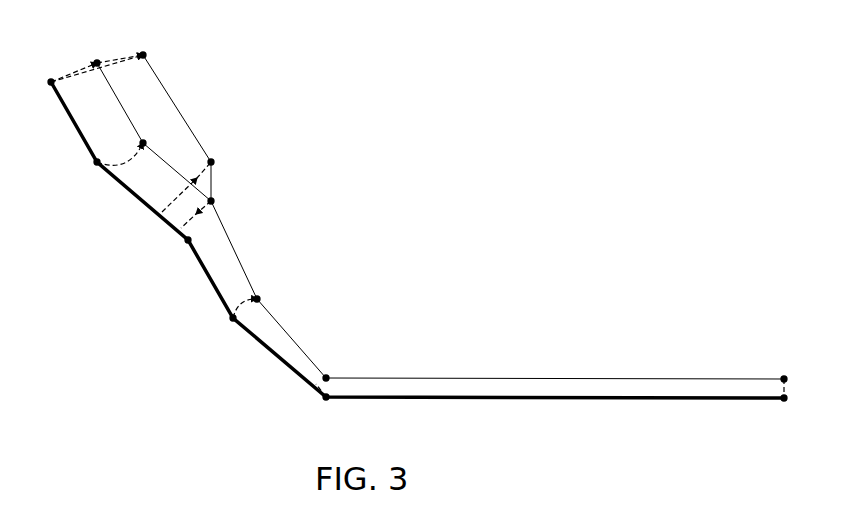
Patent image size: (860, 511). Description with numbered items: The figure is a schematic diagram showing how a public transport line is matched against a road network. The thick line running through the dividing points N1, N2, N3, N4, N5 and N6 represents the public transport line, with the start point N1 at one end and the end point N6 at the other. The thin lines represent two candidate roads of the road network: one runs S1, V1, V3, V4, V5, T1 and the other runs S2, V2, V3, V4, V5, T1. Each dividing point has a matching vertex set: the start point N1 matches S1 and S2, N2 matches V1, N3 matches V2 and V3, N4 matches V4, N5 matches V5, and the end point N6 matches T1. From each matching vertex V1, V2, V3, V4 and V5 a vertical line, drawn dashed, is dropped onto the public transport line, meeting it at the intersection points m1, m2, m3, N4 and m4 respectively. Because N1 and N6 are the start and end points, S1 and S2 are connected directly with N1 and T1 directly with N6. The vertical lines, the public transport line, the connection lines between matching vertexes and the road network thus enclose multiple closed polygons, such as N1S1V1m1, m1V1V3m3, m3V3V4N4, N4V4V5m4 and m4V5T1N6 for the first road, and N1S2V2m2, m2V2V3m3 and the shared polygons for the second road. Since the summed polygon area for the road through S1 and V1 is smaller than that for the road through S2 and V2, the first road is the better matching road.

The start point N1 is at (35, 81).
The dividing point N2 is at (81, 174).
The dividing point N3 is at (171, 252).
The dividing point N4 is at (218, 330).
The dividing point N5 is at (325, 409).
The end point N6 is at (785, 411).
The matching vertex S1 is at (82, 52).
The matching vertex S2 is at (141, 36).
The matching vertex V1 is at (142, 123).
The matching vertex V2 is at (228, 150).
The matching vertex V3 is at (228, 203).
The matching vertex V4 is at (273, 298).
The matching vertex V5 is at (342, 363).
The matching vertex T1 is at (783, 356).
The intersection point m1 is at (117, 175).
The intersection point m2 is at (162, 203).
The intersection point m3 is at (180, 224).
The intersection point m4 is at (303, 396).